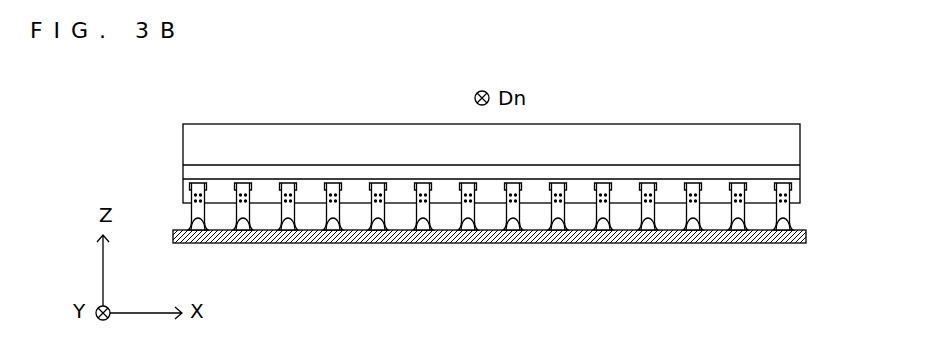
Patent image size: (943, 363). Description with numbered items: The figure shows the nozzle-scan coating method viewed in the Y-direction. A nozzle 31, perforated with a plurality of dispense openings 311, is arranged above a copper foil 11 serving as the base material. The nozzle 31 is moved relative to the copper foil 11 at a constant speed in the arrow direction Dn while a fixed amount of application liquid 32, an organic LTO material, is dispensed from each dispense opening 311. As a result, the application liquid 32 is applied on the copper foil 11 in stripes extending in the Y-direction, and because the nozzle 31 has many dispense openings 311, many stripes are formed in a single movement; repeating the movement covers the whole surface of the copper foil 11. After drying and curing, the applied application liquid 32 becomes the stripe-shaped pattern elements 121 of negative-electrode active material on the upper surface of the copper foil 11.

The copper foil 11 is at (648, 244).
The stripe-shaped pattern element 121 is at (291, 224).
The nozzle 31 is at (420, 124).
The dispense opening 311 is at (323, 189).
The application liquid 32 is at (191, 208).